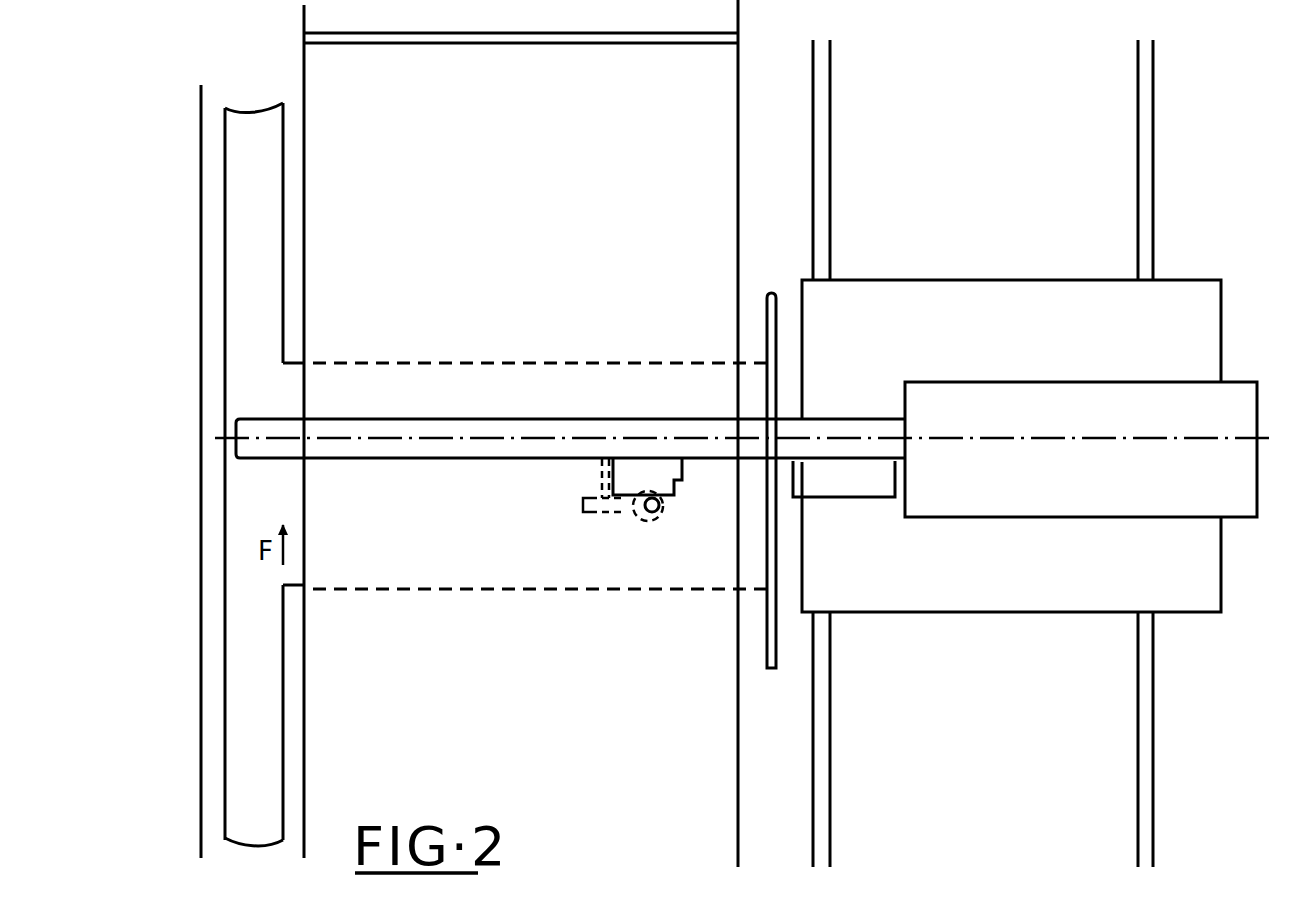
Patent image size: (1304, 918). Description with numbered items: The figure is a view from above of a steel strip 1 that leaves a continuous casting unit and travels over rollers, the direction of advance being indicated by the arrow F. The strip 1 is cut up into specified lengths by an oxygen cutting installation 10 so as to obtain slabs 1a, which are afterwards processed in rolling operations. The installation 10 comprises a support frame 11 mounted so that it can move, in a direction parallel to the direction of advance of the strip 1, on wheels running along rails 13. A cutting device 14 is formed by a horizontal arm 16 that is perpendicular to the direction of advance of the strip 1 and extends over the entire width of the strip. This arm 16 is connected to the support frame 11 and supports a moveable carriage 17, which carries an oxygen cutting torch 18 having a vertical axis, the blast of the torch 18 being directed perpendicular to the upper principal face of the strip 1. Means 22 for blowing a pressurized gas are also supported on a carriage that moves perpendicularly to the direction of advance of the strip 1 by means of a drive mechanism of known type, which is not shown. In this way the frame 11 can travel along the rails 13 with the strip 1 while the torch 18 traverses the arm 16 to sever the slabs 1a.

The steel strip 1 is at (300, 728).
The slabs 1a is at (318, 22).
The oxygen cutting installation 10 is at (1236, 314).
The support frame 11 is at (1210, 563).
The rails 13 is at (820, 772).
The cutting device 14 is at (638, 406).
The horizontal arm 16 is at (438, 435).
The moveable carriage 17 is at (682, 483).
The oxygen cutting torch 18 is at (668, 516).
The means for blowing a pressurized gas 22 is at (613, 524).